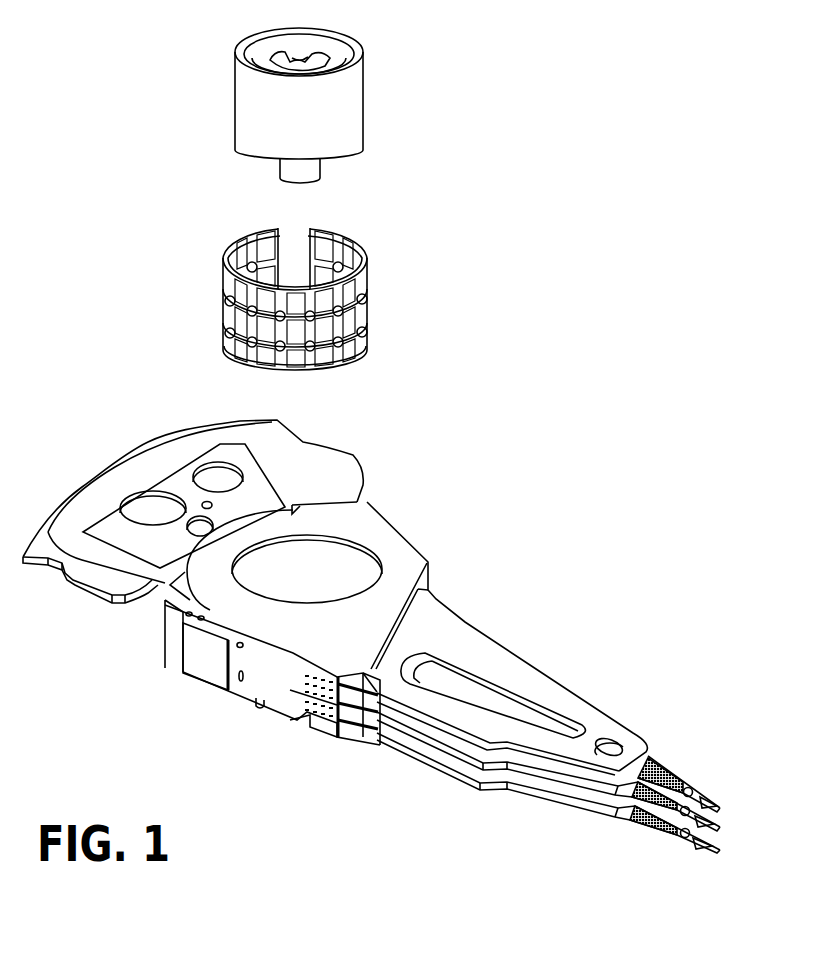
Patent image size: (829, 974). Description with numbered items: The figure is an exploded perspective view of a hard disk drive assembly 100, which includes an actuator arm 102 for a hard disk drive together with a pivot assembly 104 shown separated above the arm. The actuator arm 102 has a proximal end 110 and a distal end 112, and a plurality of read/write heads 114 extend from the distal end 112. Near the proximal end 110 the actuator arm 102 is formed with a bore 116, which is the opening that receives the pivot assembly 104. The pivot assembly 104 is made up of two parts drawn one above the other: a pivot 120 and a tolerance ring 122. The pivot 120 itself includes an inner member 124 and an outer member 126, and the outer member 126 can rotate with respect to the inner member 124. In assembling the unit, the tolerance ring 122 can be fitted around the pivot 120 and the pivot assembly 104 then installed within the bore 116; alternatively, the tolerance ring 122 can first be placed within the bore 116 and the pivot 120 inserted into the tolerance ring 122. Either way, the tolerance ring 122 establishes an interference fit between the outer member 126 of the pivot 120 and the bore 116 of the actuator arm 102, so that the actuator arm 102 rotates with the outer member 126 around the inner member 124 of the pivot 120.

The hard disk drive assembly 100 is at (566, 143).
The actuator arm 102 is at (355, 505).
The pivot assembly 104 is at (217, 17).
The proximal end 110 is at (178, 580).
The distal end 112 is at (597, 772).
The read/write heads 114 is at (670, 833).
The bore 116 is at (345, 553).
The pivot 120 is at (360, 133).
The tolerance ring 122 is at (337, 282).
The inner member 124 is at (300, 50).
The outer member 126 is at (323, 103).